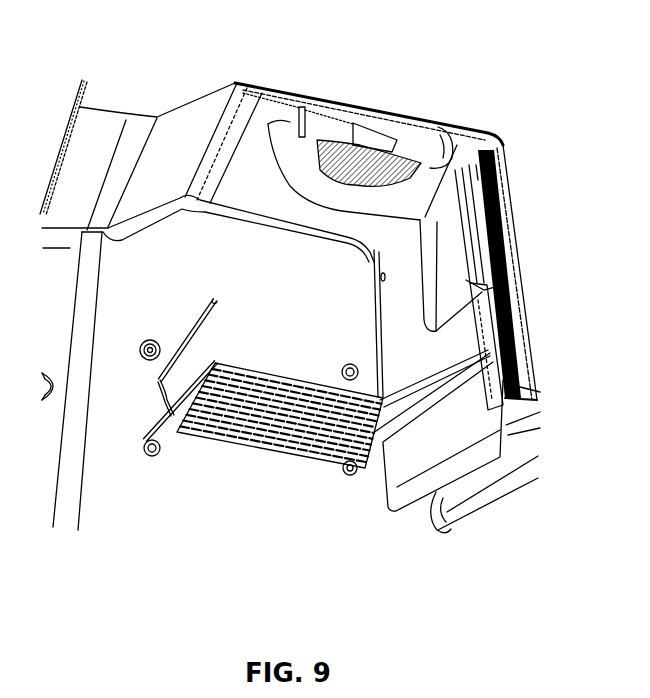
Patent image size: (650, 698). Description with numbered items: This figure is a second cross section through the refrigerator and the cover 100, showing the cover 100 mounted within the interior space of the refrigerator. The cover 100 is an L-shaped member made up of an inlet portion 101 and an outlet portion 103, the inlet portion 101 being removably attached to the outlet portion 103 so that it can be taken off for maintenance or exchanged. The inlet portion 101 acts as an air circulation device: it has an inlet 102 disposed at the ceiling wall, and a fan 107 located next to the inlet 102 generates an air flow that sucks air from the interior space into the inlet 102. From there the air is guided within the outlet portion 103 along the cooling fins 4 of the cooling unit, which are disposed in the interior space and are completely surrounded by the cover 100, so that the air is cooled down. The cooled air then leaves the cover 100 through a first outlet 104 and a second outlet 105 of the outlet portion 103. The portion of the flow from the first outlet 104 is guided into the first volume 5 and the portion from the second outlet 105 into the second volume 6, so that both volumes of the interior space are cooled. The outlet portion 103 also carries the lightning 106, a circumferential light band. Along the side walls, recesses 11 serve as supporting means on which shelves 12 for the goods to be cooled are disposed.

The cooling fins 4 is at (488, 167).
The first volume 5 is at (320, 331).
The second volume 6 is at (245, 470).
The recesses 11 is at (147, 347).
The shelves 12 is at (137, 443).
The cover 100 is at (251, 200).
The inlet portion 101 is at (308, 102).
The inlet 102 is at (445, 130).
The outlet portion 103 is at (465, 325).
The first outlet 104 is at (520, 392).
The second outlet 105 is at (518, 427).
The lightning 106 is at (273, 128).
The fan 107 is at (372, 132).